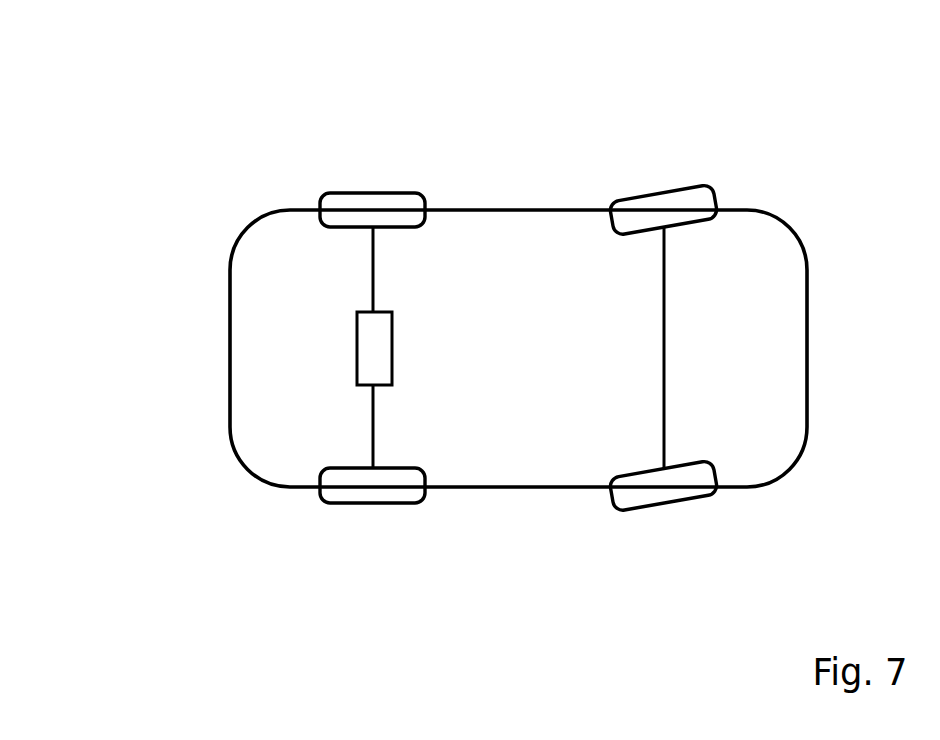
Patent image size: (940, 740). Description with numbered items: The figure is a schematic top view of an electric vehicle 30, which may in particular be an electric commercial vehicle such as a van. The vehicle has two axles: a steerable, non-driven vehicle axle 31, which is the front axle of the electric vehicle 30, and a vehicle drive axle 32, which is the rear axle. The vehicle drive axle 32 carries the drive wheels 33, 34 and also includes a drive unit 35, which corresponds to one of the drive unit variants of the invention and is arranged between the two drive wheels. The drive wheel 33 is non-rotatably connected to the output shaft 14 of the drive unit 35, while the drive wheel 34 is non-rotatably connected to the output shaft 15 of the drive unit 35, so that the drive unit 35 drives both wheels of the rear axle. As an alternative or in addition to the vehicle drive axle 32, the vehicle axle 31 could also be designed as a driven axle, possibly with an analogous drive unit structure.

The electric vehicle 30 is at (270, 122).
The vehicle axle 31 is at (688, 168).
The vehicle drive axle 32 is at (284, 349).
The drive wheel 33 is at (358, 207).
The drive wheel 34 is at (360, 490).
The drive unit 35 is at (372, 352).
The output shaft 14 is at (370, 270).
The output shaft 15 is at (372, 427).